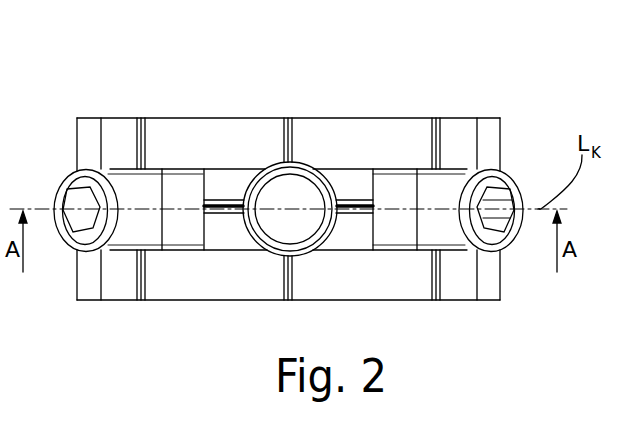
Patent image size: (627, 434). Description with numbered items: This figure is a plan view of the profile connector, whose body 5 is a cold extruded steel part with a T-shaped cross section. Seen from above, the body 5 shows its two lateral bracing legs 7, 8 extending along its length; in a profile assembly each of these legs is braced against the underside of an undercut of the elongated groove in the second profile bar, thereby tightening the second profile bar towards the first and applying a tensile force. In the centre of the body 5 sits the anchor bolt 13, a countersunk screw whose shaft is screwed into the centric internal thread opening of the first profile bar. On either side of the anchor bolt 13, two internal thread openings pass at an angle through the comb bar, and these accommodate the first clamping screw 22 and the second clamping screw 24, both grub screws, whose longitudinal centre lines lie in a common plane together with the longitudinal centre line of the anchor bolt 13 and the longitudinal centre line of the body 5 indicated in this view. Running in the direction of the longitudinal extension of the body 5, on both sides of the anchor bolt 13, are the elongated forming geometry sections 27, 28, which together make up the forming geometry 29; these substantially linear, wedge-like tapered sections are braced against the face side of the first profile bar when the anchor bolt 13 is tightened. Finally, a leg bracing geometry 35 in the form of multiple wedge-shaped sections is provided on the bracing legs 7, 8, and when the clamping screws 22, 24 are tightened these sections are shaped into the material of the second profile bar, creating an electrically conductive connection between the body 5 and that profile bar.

The body 5 is at (412, 133).
The bracing leg 7 is at (230, 282).
The bracing leg 8 is at (280, 135).
The anchor bolt 13 is at (301, 192).
The first clamping screw 22 is at (510, 182).
The second clamping screw 24 is at (70, 182).
The forming geometry section 27 is at (215, 205).
The forming geometry section 28 is at (357, 197).
The forming geometry 29 is at (227, 198).
The leg bracing geometry 35 is at (142, 118).